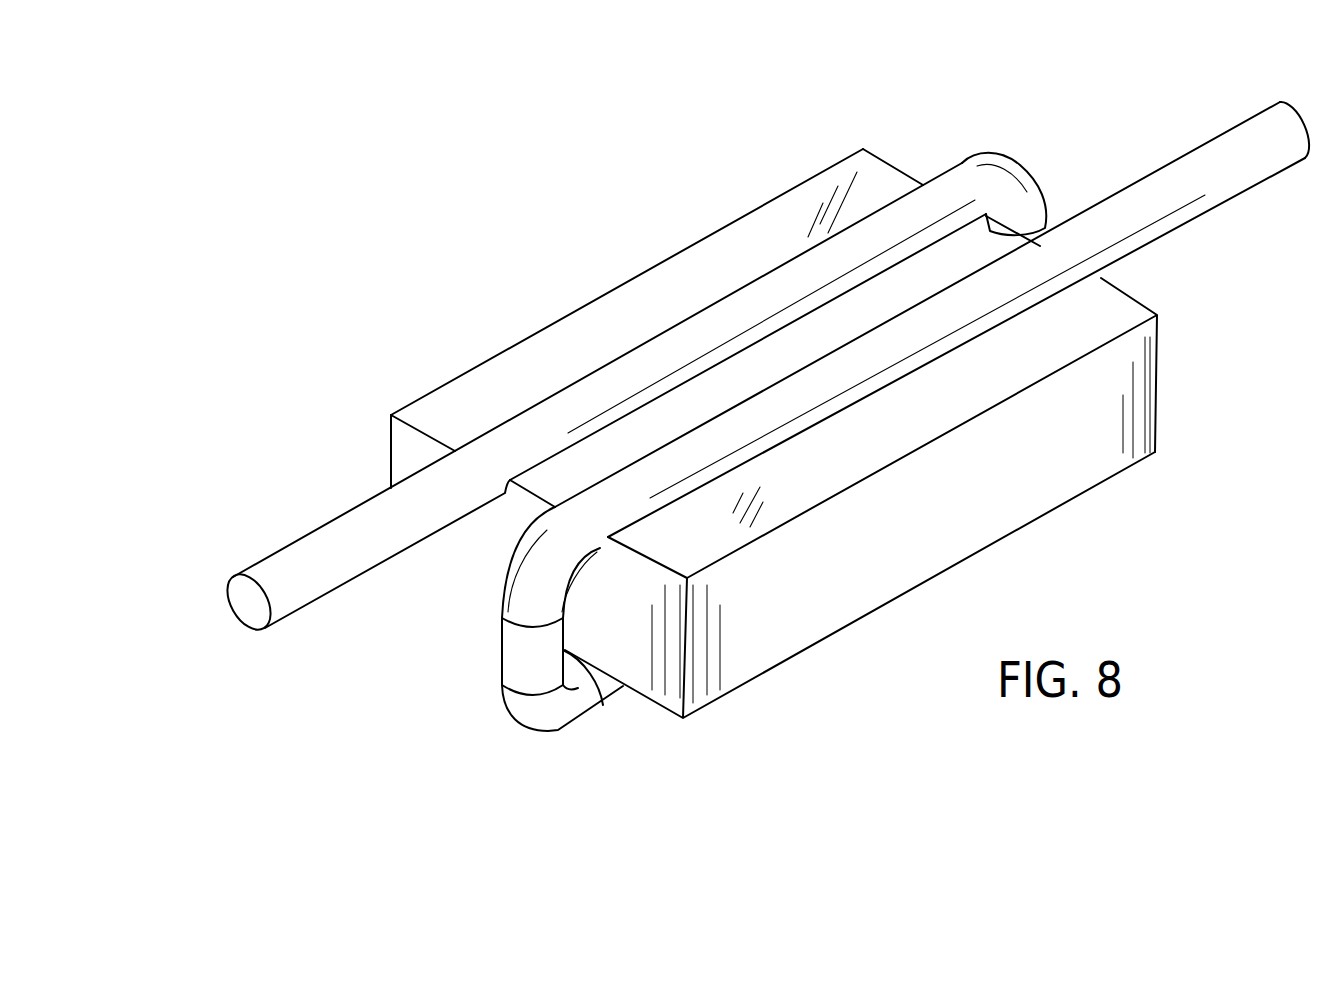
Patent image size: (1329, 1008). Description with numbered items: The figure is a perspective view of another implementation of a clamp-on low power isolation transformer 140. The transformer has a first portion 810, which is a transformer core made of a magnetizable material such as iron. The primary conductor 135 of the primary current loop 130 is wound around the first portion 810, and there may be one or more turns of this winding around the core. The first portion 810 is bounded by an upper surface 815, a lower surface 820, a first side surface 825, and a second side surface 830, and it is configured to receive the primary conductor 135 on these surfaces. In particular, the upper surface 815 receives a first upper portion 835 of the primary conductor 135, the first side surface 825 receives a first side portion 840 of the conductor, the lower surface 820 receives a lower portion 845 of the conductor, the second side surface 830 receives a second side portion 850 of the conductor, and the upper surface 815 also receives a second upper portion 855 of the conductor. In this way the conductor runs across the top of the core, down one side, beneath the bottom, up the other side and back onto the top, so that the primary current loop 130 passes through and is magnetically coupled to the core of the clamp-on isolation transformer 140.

The primary current loop 130 is at (214, 628).
The primary conductor 135 is at (290, 549).
The clamp-on isolation transformer 140 is at (739, 93).
The first portion 810 is at (1092, 448).
The upper surface 815 is at (675, 283).
The lower surface 820 is at (667, 710).
The first side surface 825 is at (900, 170).
The second side surface 830 is at (458, 558).
The first upper portion 835 is at (539, 418).
The first side portion 840 is at (1040, 193).
The lower portion 845 is at (607, 700).
The second side portion 850 is at (500, 663).
The second upper portion 855 is at (1123, 290).